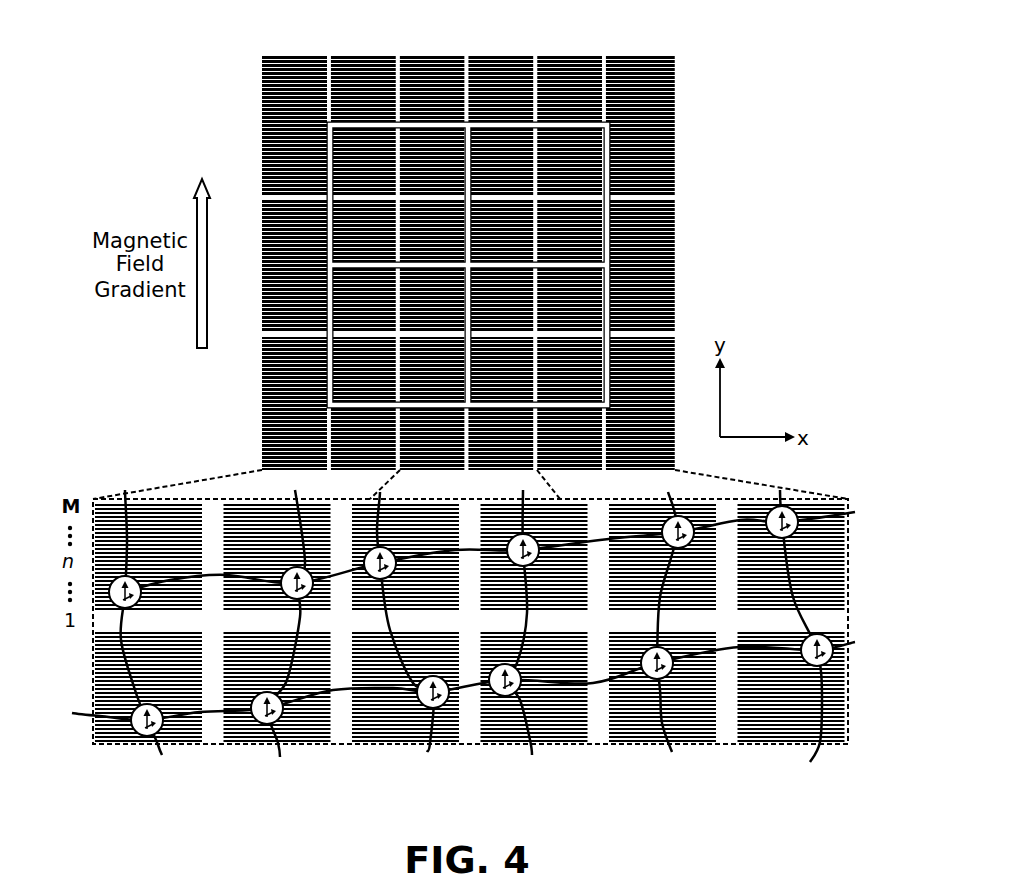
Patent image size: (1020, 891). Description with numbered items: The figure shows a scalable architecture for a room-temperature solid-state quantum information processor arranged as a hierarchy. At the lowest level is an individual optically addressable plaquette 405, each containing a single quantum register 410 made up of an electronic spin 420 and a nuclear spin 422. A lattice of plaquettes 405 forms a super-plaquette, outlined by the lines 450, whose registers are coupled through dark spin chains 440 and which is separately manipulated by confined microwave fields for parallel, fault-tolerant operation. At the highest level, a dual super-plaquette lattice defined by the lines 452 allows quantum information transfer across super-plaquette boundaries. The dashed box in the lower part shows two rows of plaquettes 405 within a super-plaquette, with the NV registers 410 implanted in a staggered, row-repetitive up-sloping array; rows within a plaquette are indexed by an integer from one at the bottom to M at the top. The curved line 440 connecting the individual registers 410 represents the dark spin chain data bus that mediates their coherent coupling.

The plaquette 405 is at (273, 55).
The quantum register 410 is at (415, 742).
The electronic spin 420 is at (240, 742).
The nuclear spin 422 is at (297, 742).
The dark spin chain 440 is at (112, 742).
The super-plaquette outline lines 450 is at (402, 68).
The dual super-plaquette lattice lines 452 is at (485, 57).